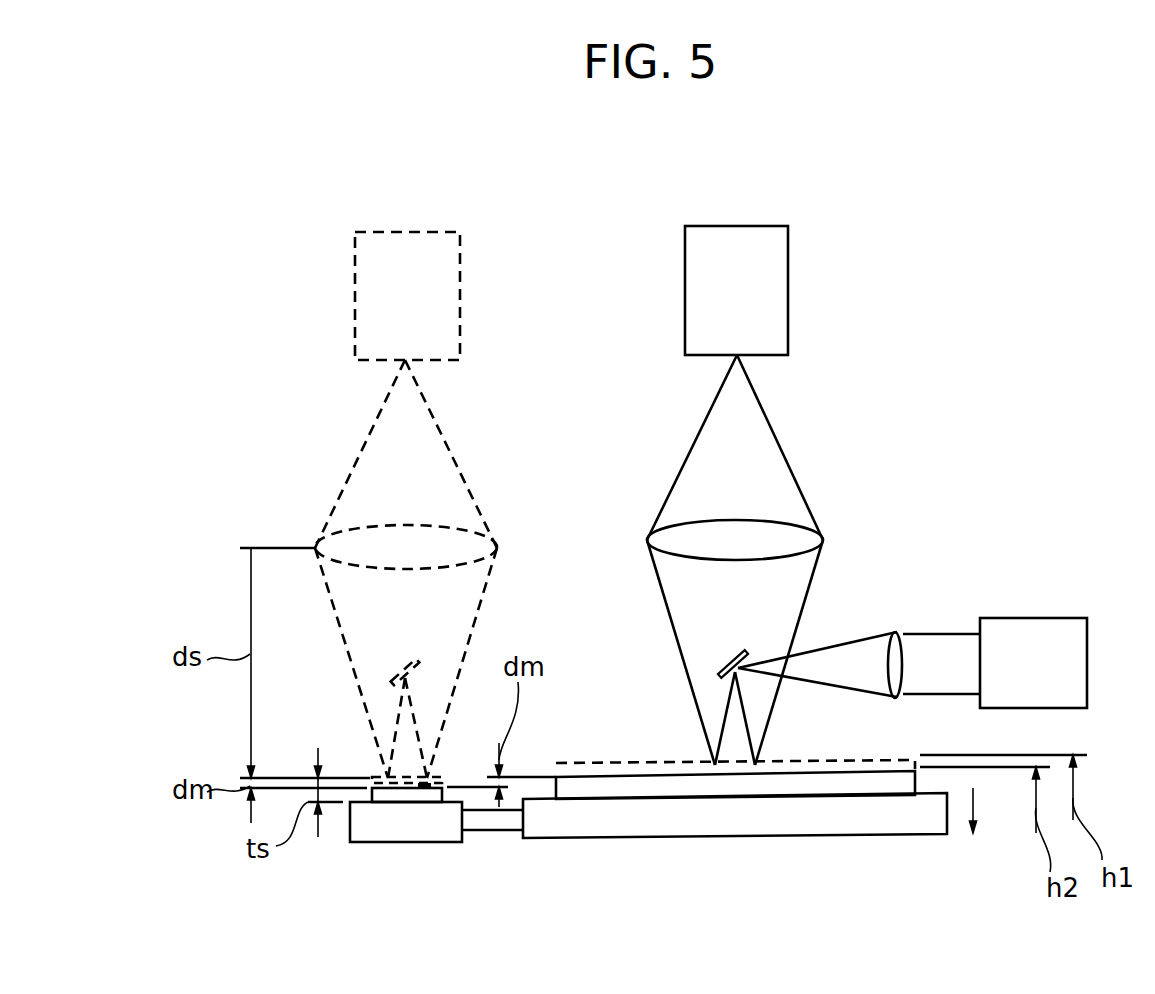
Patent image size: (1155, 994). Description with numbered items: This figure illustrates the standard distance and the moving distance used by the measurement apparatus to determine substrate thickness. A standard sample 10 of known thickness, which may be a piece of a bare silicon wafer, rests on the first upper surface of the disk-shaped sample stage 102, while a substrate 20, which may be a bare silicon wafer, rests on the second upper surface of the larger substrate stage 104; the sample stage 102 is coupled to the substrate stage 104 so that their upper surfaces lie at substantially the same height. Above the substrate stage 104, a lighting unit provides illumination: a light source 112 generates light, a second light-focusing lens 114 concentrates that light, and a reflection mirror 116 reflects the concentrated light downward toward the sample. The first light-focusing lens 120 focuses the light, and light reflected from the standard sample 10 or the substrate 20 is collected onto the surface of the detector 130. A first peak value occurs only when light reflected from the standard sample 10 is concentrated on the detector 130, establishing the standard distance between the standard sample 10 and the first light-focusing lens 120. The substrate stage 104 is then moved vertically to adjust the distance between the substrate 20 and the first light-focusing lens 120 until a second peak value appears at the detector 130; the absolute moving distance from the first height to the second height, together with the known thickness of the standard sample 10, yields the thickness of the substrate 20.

The detector 130 is at (786, 288).
The first light-focusing lens 120 is at (792, 530).
The reflection mirror 116 is at (724, 664).
The second light-focusing lens 114 is at (897, 645).
The light source 112 is at (1036, 620).
The substrate 20 is at (678, 786).
The substrate stage 104 is at (590, 842).
The sample stage 102 is at (385, 845).
The standard sample 10 is at (436, 805).